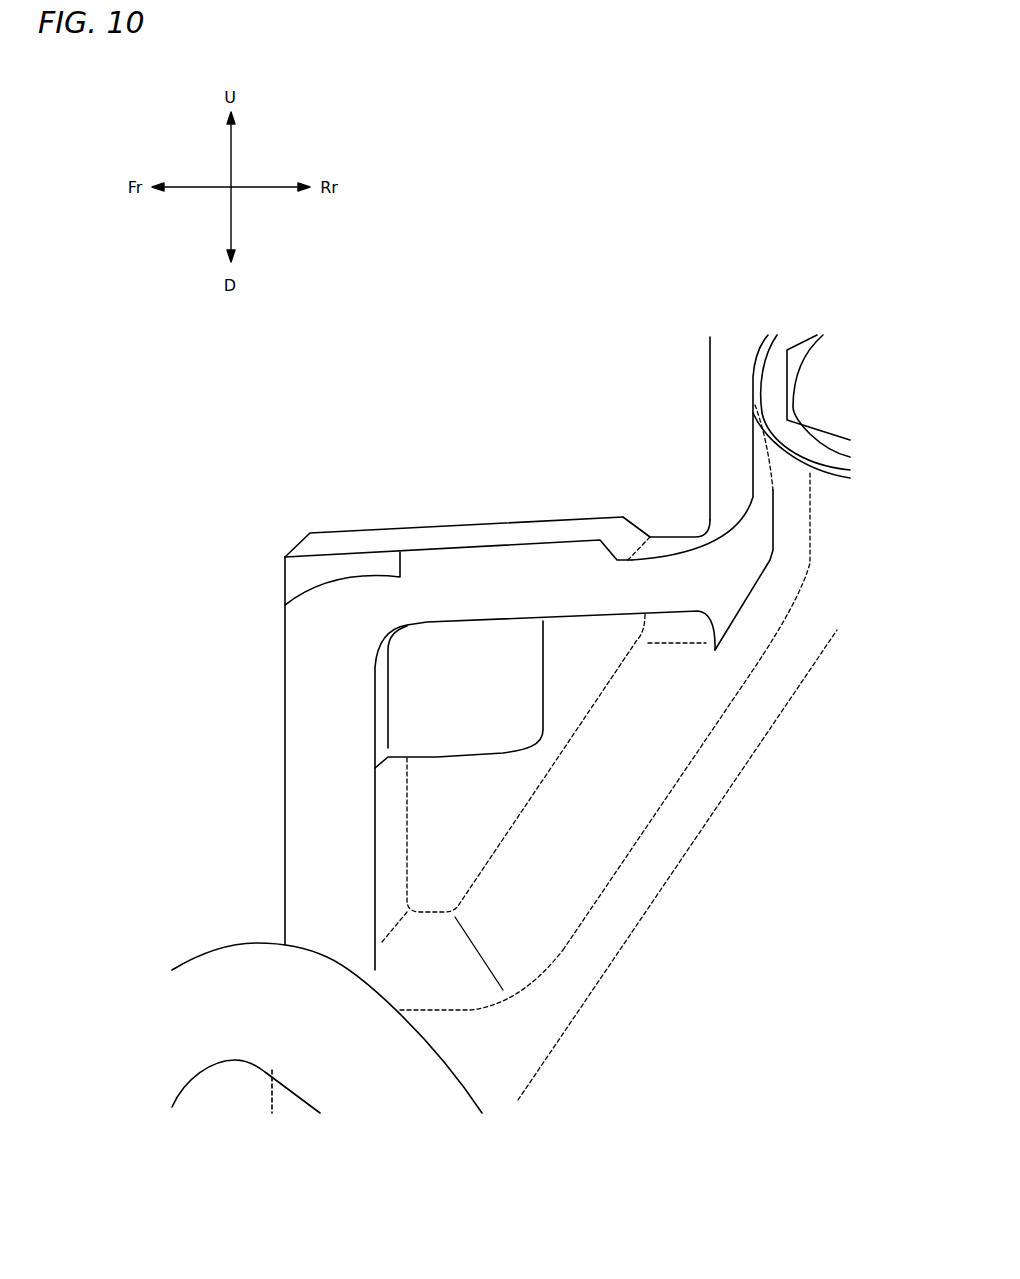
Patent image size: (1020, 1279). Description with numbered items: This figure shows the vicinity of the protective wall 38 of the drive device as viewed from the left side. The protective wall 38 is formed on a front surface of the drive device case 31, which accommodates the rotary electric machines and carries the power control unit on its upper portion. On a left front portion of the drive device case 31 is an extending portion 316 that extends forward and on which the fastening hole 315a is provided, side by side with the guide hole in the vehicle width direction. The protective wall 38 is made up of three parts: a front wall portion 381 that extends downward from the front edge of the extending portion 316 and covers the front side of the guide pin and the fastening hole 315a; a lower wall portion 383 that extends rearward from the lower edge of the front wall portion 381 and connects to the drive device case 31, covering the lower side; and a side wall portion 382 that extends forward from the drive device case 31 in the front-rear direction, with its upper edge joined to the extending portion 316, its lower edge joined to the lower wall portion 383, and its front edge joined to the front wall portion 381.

The drive device case 31 is at (773, 552).
The protective wall 38 is at (266, 766).
The fastening hole 315a is at (470, 677).
The extending portion 316 is at (350, 551).
The front wall portion 381 is at (307, 687).
The side wall portion 382 is at (495, 792).
The lower wall portion 383 is at (428, 958).